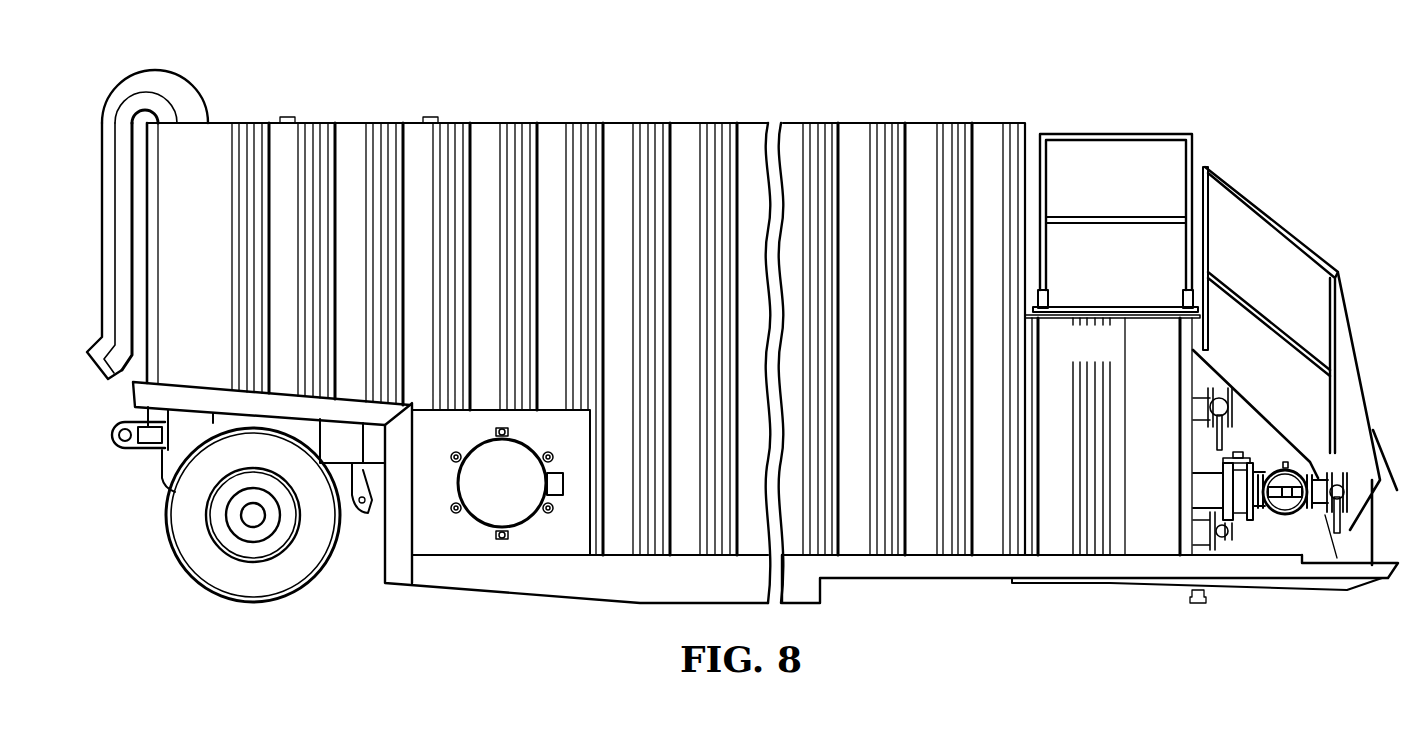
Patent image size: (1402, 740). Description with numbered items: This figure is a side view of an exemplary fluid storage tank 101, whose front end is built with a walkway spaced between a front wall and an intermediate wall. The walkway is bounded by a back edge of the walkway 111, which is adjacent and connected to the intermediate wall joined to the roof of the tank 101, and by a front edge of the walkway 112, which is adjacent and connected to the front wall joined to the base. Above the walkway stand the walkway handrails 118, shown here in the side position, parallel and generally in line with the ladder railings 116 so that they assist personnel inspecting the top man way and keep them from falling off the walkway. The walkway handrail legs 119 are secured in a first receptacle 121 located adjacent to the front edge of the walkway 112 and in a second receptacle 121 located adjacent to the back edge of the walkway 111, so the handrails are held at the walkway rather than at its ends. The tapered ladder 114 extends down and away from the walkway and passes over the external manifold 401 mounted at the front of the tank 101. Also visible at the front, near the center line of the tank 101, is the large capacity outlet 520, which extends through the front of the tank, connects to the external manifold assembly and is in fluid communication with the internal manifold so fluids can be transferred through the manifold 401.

The tank 101 is at (548, 124).
The back edge of the walkway 111 is at (1025, 320).
The front edge of the walkway 112 is at (1197, 320).
The ladder 114 is at (1240, 352).
The ladder handrails 116 is at (1257, 205).
The walkway handrails 118 is at (1115, 191).
The walkway handrail legs 119 is at (1048, 195).
The receptacle 121 is at (1185, 300).
The external manifold 401 is at (1275, 512).
The large capacity outlet 520 is at (1205, 470).